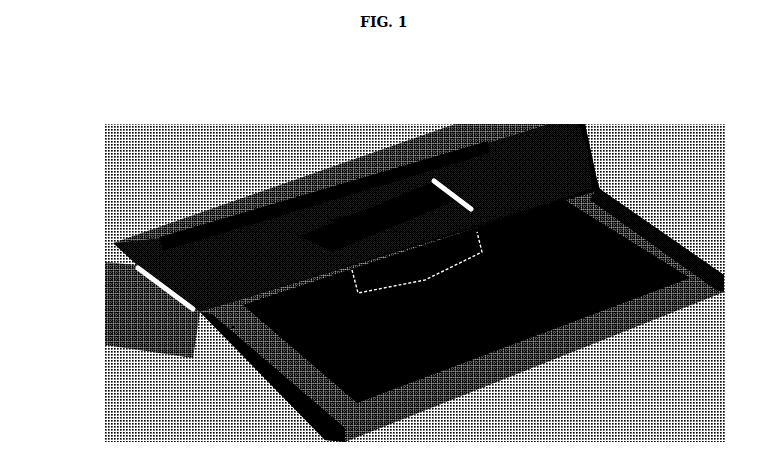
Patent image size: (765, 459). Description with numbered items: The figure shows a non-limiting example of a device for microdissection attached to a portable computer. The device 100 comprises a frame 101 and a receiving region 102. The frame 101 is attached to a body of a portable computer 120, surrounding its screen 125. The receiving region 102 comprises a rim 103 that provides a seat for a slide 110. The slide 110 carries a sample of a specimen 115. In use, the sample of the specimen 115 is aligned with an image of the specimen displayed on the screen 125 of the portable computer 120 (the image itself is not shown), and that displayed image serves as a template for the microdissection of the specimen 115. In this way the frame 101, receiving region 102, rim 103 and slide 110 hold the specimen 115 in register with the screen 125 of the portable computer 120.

The device 100 is at (125, 356).
The frame 101 is at (549, 158).
The receiving region 102 is at (425, 280).
The rim 103 is at (387, 208).
The slide 110 is at (372, 172).
The specimen 115 is at (352, 227).
The portable computer 120 is at (283, 374).
The screen 125 is at (466, 301).